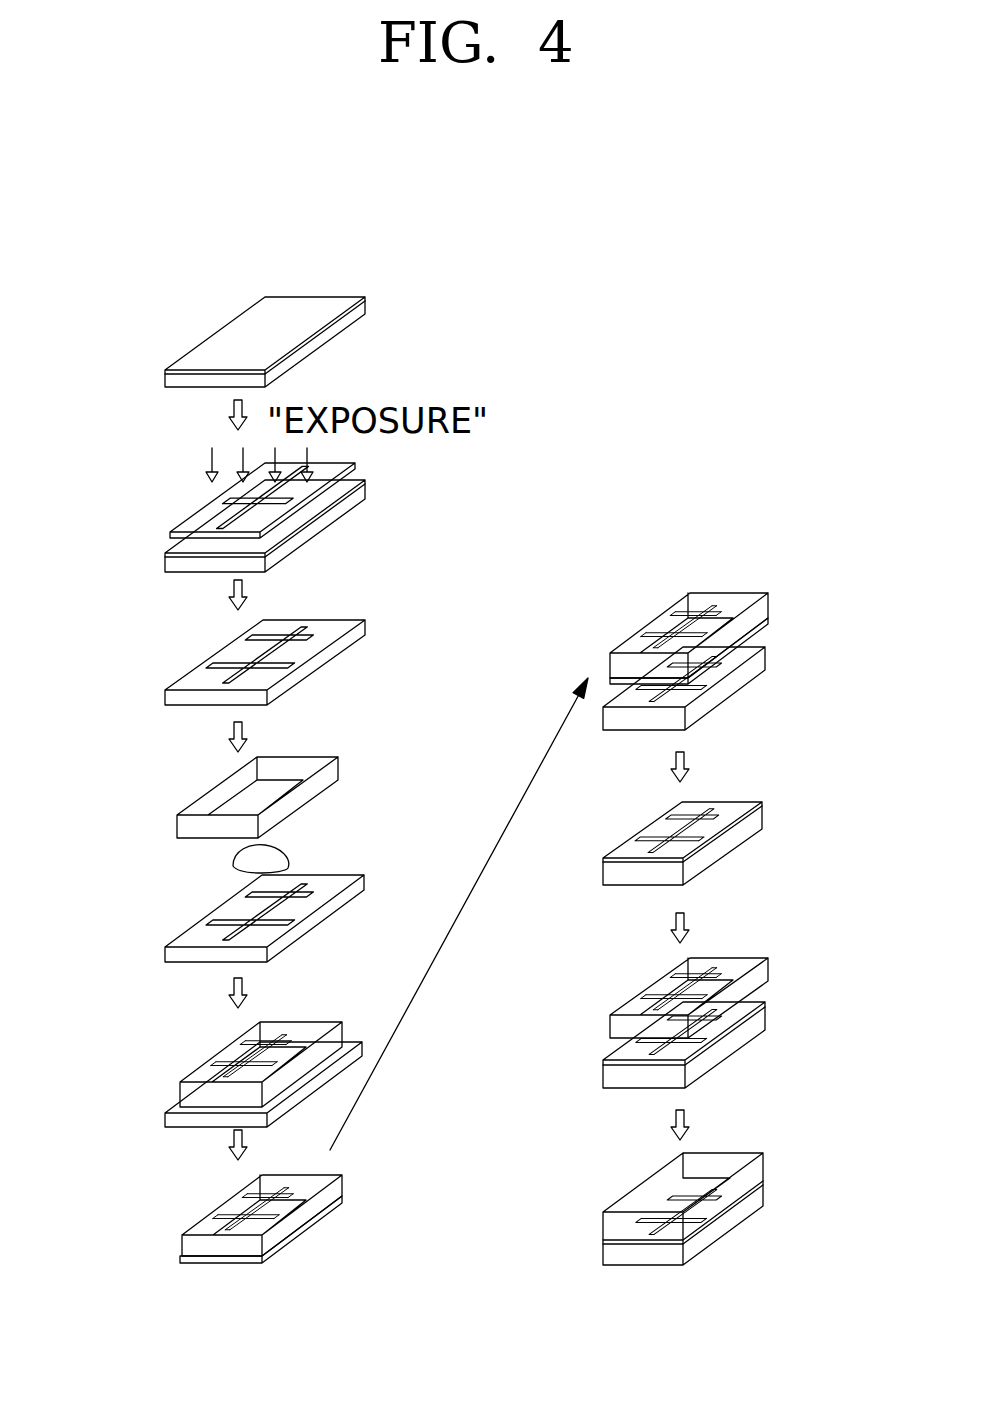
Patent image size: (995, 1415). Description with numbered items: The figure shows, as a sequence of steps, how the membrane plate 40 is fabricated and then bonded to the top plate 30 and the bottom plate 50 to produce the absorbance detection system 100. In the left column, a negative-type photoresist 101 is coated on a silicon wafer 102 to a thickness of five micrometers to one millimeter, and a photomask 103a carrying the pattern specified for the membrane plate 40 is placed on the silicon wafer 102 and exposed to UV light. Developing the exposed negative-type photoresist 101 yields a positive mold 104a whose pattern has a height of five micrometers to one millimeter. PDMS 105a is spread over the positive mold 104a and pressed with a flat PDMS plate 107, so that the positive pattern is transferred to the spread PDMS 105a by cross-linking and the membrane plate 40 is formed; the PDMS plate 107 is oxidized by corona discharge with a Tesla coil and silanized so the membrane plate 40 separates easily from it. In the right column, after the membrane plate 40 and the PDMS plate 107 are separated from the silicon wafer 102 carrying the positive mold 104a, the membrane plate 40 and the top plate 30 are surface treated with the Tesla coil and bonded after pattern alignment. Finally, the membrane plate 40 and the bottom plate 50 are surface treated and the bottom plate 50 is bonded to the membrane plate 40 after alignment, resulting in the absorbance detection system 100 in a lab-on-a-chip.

The negative-type photoresist 101 is at (210, 345).
The silicon wafer 102 is at (317, 348).
The photomask 103a is at (202, 525).
The positive mold 104a is at (197, 677).
The PDMS 105a is at (233, 862).
The flat PDMS plate 107 is at (195, 802).
The membrane plate 40 is at (185, 1262).
The top plate 30 is at (742, 695).
The bottom plate 50 is at (763, 970).
The absorbance detection system 100 is at (590, 1285).